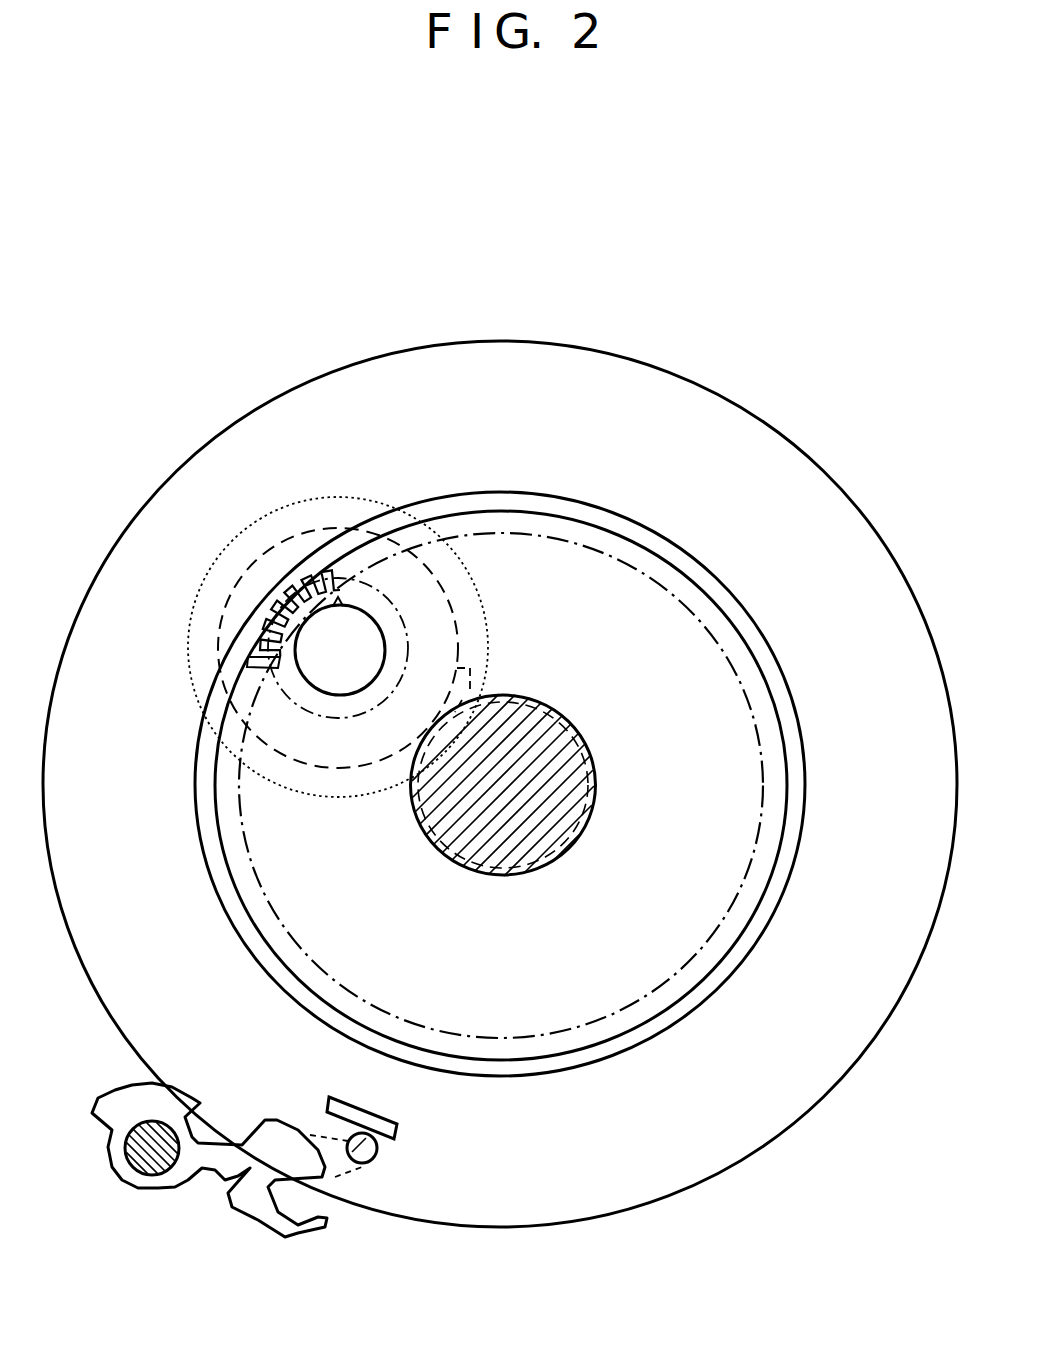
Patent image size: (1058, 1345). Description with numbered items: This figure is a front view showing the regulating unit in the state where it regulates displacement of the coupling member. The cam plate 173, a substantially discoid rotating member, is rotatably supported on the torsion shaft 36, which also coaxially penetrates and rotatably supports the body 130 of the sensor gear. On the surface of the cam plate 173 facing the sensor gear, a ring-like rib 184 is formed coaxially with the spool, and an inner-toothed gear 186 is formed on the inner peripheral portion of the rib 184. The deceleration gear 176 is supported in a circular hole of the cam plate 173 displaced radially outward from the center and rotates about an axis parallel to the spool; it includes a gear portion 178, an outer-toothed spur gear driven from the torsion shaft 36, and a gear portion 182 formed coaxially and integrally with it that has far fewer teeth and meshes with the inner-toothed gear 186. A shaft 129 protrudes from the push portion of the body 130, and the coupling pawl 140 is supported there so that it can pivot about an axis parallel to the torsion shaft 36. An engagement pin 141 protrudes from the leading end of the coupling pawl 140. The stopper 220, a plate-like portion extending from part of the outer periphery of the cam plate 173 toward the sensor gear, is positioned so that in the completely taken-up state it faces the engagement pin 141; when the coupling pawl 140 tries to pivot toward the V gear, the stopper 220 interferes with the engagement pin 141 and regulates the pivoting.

The cam plate 173 is at (313, 393).
The ring-like rib 184 is at (538, 474).
The inner-toothed gear 186 is at (340, 597).
The gear portion 182 is at (340, 598).
The deceleration gear 176 is at (497, 647).
The gear portion 178 is at (462, 668).
The torsion shaft 36 is at (545, 868).
The body 130 is at (493, 876).
The shaft 129 is at (158, 1177).
The coupling pawl 140 is at (247, 1207).
The engagement pin 141 is at (372, 1153).
The stopper 220 is at (398, 1132).